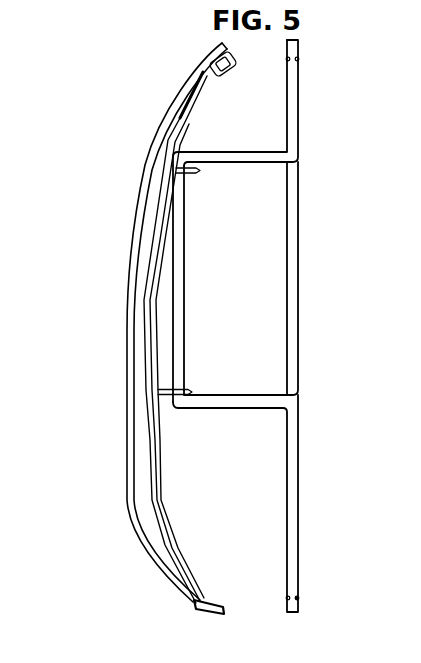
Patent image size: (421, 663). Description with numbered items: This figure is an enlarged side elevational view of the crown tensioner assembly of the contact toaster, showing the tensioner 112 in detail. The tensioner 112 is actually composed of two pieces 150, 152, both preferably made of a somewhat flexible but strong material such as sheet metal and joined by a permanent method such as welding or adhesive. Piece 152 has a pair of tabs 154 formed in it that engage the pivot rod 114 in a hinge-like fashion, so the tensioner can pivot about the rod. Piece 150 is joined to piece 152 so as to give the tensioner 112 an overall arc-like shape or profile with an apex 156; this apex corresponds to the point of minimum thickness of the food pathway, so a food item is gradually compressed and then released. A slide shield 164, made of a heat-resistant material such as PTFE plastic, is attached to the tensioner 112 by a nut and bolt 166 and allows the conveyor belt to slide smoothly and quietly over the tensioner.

The tensioner 112 is at (209, 327).
The pivot rod 114 is at (298, 85).
The piece 150 is at (148, 412).
The piece 152 is at (160, 282).
The tabs 154 is at (200, 170).
The apex 156 is at (143, 300).
The slide shield 164 is at (198, 562).
The nut and bolt 166 is at (203, 72).